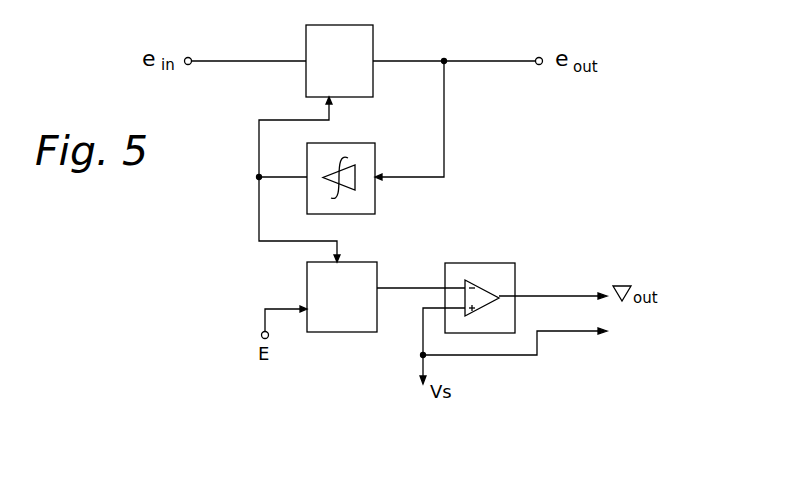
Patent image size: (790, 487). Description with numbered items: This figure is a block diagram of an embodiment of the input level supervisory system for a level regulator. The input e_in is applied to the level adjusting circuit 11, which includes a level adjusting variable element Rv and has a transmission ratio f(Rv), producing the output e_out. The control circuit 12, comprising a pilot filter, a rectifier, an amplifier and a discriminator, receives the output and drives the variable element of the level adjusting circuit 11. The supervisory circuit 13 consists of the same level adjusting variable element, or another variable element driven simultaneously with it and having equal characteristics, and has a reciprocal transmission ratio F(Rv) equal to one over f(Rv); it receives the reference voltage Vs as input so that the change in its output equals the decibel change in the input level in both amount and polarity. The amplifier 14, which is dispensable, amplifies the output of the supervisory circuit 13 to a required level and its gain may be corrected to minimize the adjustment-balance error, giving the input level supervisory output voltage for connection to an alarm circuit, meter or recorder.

The level adjusting circuit 11 is at (373, 27).
The control circuit 12 is at (375, 143).
The supervisory circuit 13 is at (377, 262).
The amplifier 14 is at (495, 263).